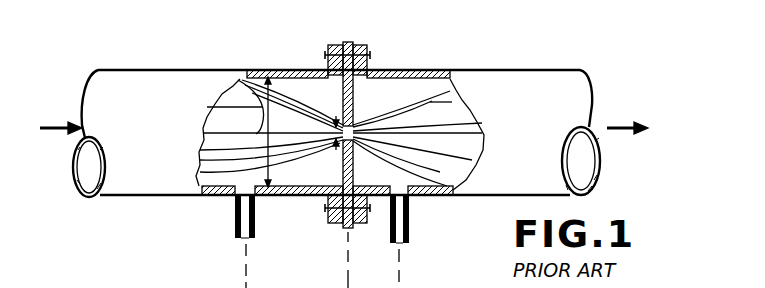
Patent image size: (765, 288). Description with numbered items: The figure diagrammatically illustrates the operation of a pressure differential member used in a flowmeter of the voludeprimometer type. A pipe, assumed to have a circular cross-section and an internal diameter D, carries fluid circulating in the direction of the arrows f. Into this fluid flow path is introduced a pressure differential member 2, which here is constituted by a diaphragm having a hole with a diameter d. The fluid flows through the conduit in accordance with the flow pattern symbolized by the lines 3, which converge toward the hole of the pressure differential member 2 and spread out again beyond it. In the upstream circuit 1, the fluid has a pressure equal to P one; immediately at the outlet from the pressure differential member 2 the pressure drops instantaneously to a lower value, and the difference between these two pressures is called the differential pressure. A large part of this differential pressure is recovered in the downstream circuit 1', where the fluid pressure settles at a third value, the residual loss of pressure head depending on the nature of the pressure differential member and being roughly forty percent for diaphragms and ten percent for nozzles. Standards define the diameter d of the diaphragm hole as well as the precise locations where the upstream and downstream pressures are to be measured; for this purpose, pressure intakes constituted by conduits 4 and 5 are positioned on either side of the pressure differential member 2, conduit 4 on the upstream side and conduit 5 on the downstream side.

The upstream circuit 1 is at (326, 117).
The downstream circuit 1' is at (560, 116).
The pressure differential member 2 is at (350, 42).
The flow lines 3 is at (441, 133).
The pressure intake conduit 4 is at (236, 226).
The pressure intake conduit 5 is at (409, 226).
The internal diameter D is at (247, 79).
The diaphragm hole diameter d is at (336, 134).
The flow direction arrows f is at (60, 133).